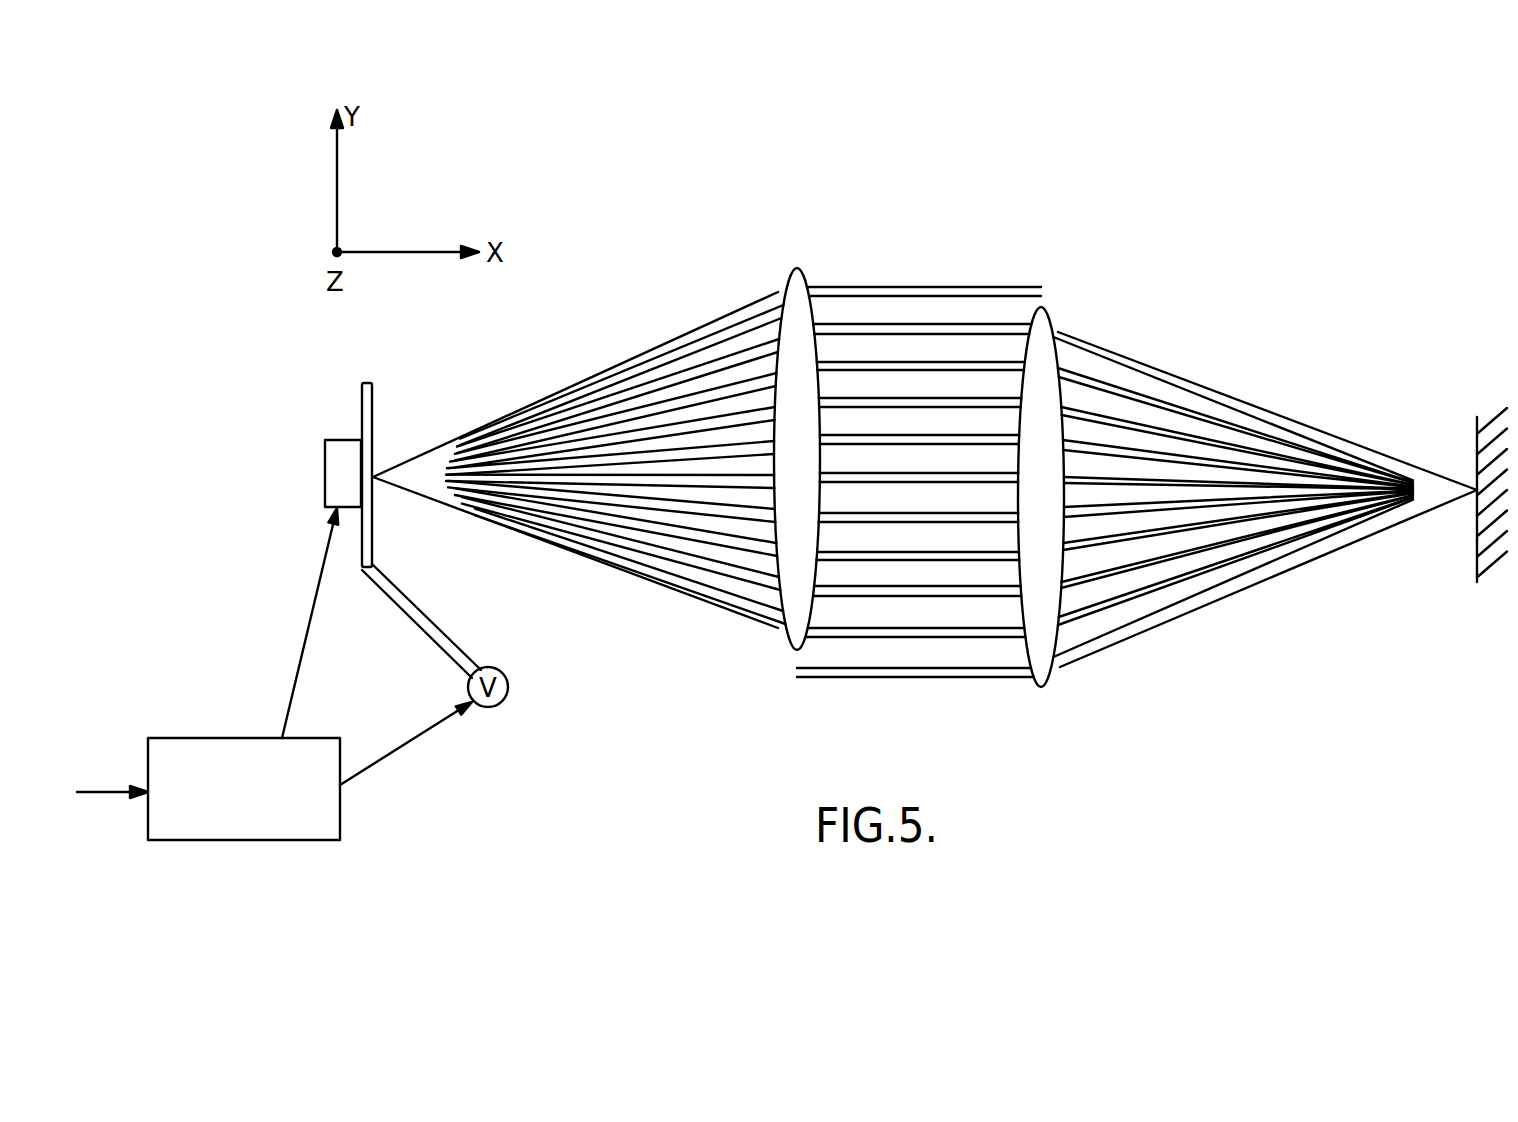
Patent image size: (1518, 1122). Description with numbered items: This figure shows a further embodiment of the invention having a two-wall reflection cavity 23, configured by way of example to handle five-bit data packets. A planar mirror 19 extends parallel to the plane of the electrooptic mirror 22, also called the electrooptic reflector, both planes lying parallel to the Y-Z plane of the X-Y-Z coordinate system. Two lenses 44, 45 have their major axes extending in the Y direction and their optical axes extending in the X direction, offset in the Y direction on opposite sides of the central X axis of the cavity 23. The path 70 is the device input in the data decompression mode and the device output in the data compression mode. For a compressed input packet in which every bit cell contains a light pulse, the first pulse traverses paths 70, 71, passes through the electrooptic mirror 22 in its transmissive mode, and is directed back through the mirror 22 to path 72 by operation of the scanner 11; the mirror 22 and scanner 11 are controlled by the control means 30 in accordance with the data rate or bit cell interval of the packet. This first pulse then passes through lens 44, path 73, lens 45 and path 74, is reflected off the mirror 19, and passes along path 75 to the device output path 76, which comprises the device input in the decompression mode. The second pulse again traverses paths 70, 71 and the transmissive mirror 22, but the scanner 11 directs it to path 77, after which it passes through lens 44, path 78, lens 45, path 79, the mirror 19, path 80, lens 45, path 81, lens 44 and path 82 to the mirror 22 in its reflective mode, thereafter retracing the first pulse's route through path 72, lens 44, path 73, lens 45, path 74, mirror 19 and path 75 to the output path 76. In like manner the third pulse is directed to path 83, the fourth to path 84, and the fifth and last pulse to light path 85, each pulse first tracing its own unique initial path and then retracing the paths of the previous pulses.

The scanner 11 is at (337, 440).
The electrooptic mirror 22 is at (355, 569).
The control means 30 is at (263, 840).
The lens 44 is at (797, 300).
The lens 45 is at (1057, 328).
The planar mirror 19 is at (1477, 452).
The cavity 23 is at (1016, 219).
The path 70 is at (877, 287).
The path 71 is at (577, 382).
The path 72 is at (647, 370).
The path 73 is at (842, 323).
The path 74 is at (1137, 358).
The path 75 is at (1297, 572).
The output path 76 is at (855, 677).
The path 77 is at (570, 433).
The path 78 is at (895, 397).
The path 79 is at (1178, 427).
The path 80 is at (1228, 552).
The path 81 is at (892, 598).
The path 82 is at (647, 550).
The path 83 is at (708, 473).
The path 84 is at (620, 523).
The light path 85 is at (722, 605).